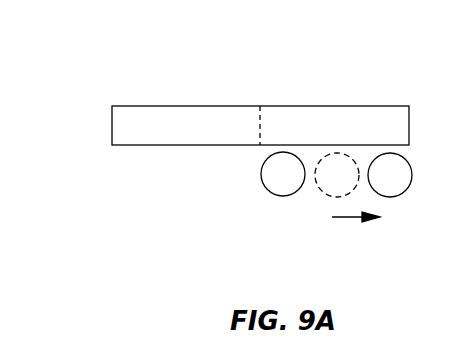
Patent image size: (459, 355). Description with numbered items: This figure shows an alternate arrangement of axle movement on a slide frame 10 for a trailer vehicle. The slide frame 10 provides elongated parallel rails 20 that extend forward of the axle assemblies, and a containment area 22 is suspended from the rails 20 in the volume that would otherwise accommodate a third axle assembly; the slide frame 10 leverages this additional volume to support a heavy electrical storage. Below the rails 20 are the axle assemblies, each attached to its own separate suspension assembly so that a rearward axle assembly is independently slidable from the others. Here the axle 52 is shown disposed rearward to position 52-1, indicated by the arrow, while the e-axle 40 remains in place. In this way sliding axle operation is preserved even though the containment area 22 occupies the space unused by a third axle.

The slide frame 10 is at (238, 155).
The elongated frame rails 20 is at (372, 106).
The containment area 22 is at (112, 87).
The e-axle 40 is at (261, 174).
The axle 52 is at (328, 197).
The rearward axle position 52-1 is at (411, 182).